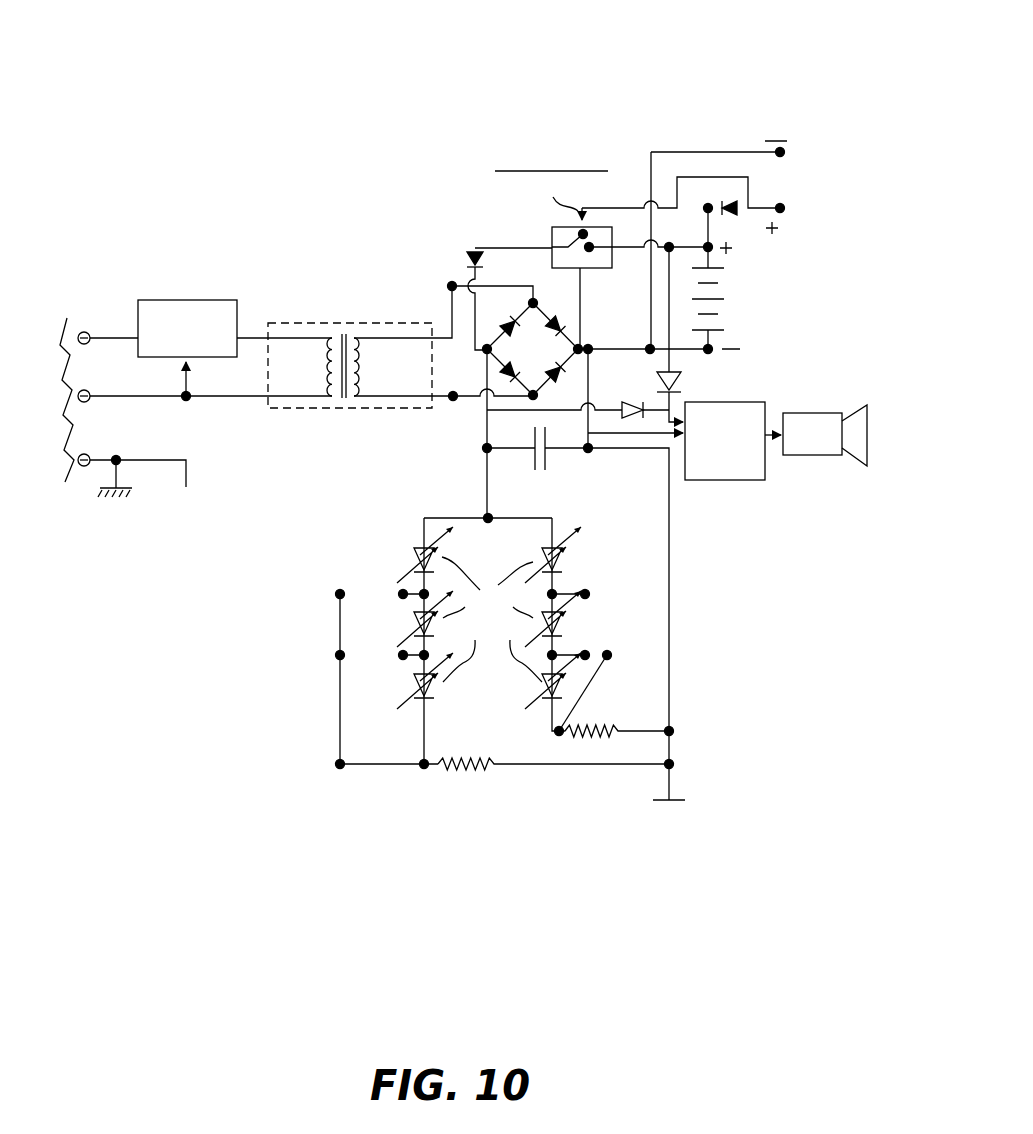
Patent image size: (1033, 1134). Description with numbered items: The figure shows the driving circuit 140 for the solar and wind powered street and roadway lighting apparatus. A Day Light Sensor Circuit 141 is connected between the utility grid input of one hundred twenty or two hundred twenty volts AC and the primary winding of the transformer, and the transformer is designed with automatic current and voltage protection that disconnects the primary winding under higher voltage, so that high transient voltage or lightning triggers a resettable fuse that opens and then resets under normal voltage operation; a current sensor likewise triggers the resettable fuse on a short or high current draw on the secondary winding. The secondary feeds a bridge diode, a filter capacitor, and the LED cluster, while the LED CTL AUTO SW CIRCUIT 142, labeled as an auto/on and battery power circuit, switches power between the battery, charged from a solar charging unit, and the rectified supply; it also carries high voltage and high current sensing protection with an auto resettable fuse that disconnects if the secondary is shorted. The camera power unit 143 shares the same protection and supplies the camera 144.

The camera power and lighting circuit 140 is at (472, 62).
The Day Light Sensor Circuit 141 is at (187, 300).
The LED CTL AUTO SW CIRCUIT 142 is at (576, 152).
The camera power unit 143 is at (752, 402).
The camera 144 is at (818, 413).